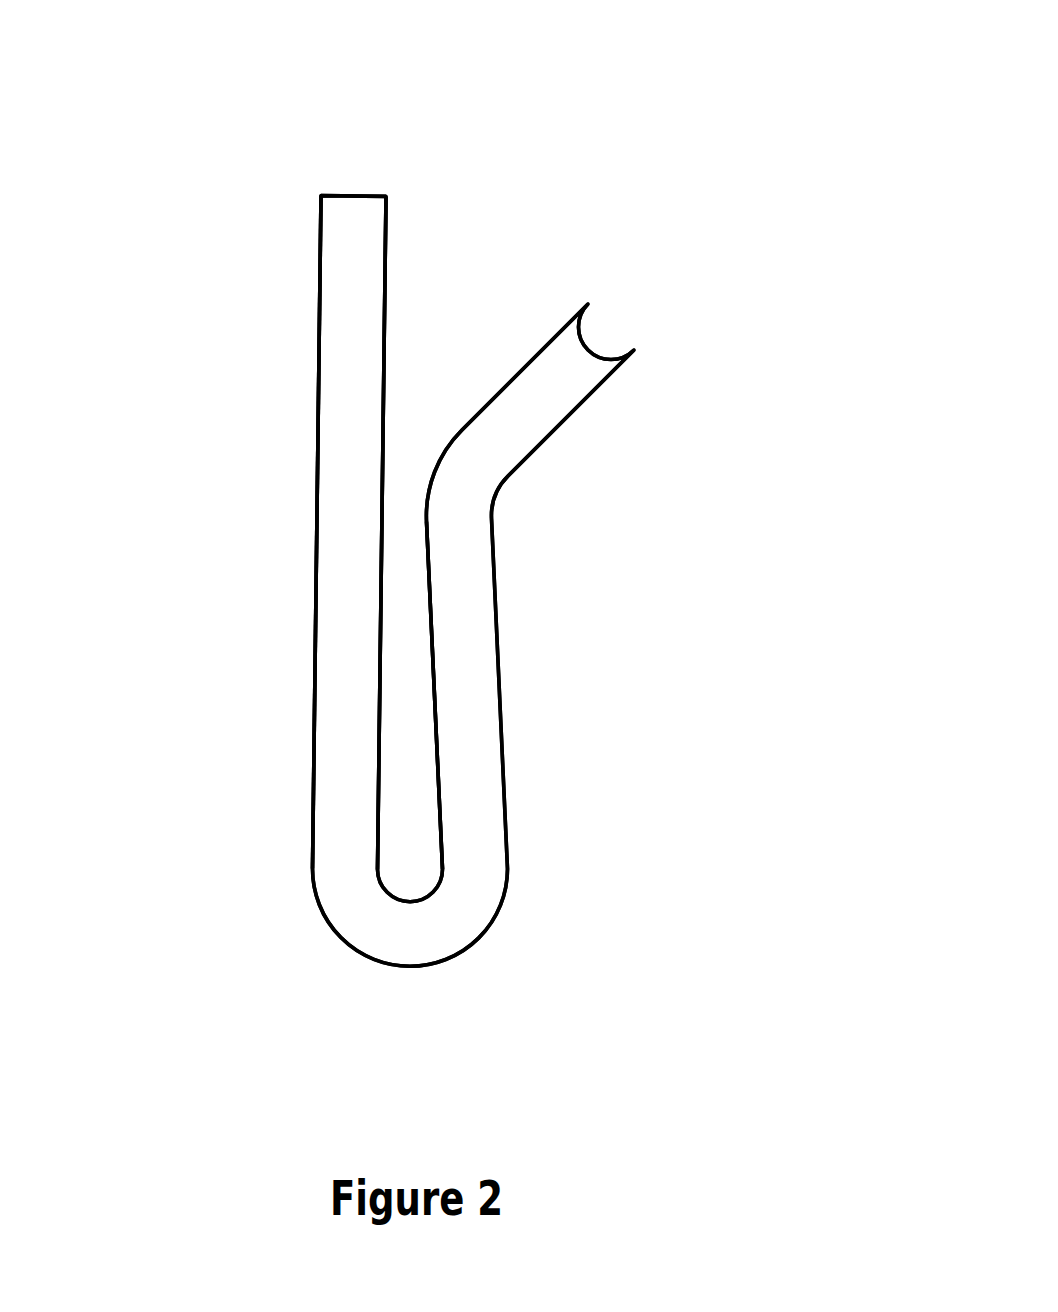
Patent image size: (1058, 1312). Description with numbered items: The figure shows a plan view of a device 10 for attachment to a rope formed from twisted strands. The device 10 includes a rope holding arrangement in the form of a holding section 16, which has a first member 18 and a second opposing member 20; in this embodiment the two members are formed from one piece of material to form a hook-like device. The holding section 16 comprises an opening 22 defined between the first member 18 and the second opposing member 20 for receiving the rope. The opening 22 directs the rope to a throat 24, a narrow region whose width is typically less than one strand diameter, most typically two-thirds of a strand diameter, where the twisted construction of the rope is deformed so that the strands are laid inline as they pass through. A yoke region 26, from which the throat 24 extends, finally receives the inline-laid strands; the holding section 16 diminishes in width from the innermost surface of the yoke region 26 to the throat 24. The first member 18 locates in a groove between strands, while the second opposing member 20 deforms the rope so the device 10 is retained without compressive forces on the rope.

The device 10 is at (719, 958).
The holding section 16 is at (267, 828).
The first member 18 is at (303, 530).
The second opposing member 20 is at (514, 702).
The opening 22 is at (511, 221).
The throat 24 is at (424, 517).
The yoke region 26 is at (422, 878).